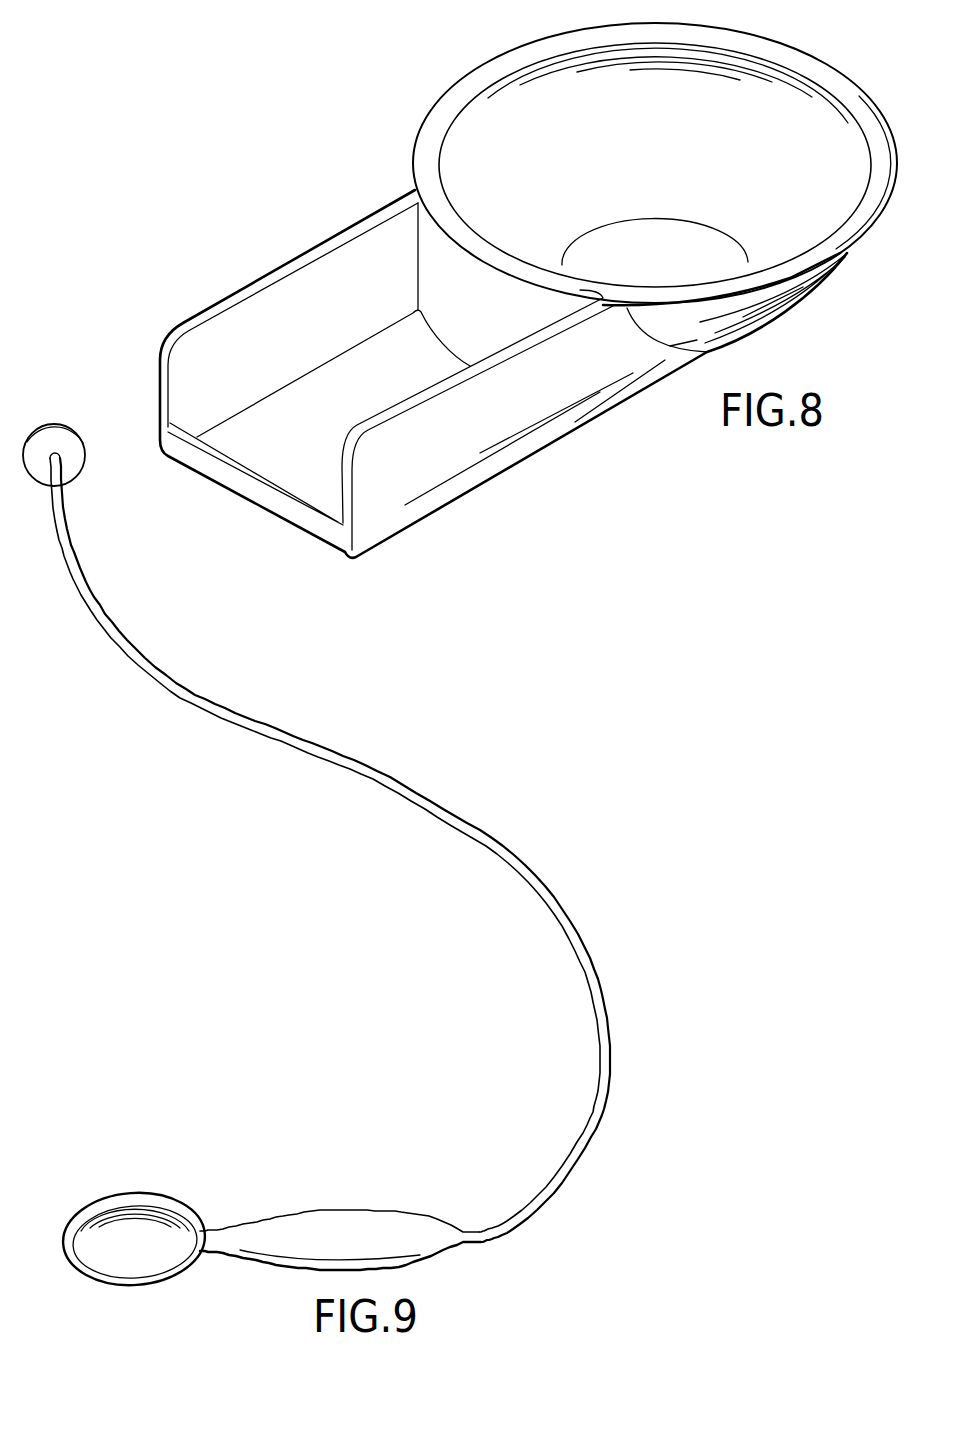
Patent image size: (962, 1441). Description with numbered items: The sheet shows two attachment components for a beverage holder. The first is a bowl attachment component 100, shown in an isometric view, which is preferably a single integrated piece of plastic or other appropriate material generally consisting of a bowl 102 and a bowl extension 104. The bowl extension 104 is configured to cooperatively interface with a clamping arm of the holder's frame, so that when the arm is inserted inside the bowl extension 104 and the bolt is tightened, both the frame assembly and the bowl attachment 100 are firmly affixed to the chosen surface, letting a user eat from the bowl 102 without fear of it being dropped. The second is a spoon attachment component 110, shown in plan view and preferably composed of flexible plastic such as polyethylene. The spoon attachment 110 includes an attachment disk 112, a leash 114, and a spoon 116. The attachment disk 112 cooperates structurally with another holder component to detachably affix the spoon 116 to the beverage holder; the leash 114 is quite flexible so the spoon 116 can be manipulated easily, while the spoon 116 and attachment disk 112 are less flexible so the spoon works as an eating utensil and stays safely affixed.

In FIG. 8, the bowl attachment component 100 is at (302, 210).
In FIG. 8, the bowl 102 is at (488, 122).
In FIG. 8, the bowl extension 104 is at (290, 476).
In FIG. 9, the spoon attachment component 110 is at (532, 831).
In FIG. 9, the attachment disk 112 is at (54, 422).
In FIG. 9, the leash 114 is at (612, 1052).
In FIG. 9, the spoon 116 is at (362, 1211).